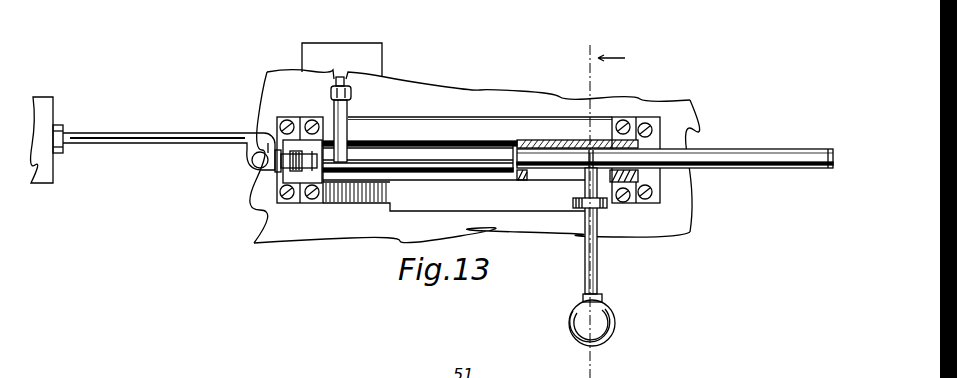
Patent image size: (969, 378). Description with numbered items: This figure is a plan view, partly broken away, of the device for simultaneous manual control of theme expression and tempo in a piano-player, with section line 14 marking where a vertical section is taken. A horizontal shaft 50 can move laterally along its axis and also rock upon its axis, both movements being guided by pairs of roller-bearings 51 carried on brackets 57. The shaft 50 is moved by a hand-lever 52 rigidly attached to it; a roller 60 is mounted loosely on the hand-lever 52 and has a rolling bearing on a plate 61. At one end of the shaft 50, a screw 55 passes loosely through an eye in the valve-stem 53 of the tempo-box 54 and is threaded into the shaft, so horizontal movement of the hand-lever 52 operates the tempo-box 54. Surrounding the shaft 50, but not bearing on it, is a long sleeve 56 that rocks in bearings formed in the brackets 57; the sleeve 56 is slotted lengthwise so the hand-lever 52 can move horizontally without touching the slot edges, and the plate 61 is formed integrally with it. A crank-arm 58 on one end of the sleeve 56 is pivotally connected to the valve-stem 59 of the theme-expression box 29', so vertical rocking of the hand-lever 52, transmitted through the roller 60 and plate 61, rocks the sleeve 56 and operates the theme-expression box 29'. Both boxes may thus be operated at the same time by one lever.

The section line 14 is at (617, 211).
The theme-expression box 29' is at (366, 58).
The horizontal shaft 50 is at (738, 157).
The roller-bearings 51 is at (287, 173).
The hand-lever 52 is at (615, 322).
The valve-stem 53 is at (128, 135).
The tempo-box 54 is at (44, 110).
The screw 55 is at (248, 162).
The sleeve 56 is at (450, 153).
The brackets 57 is at (303, 142).
The crank-arm 58 is at (340, 113).
The valve-stem 59 is at (340, 83).
The roller 60 is at (600, 206).
The plate 61 is at (427, 193).